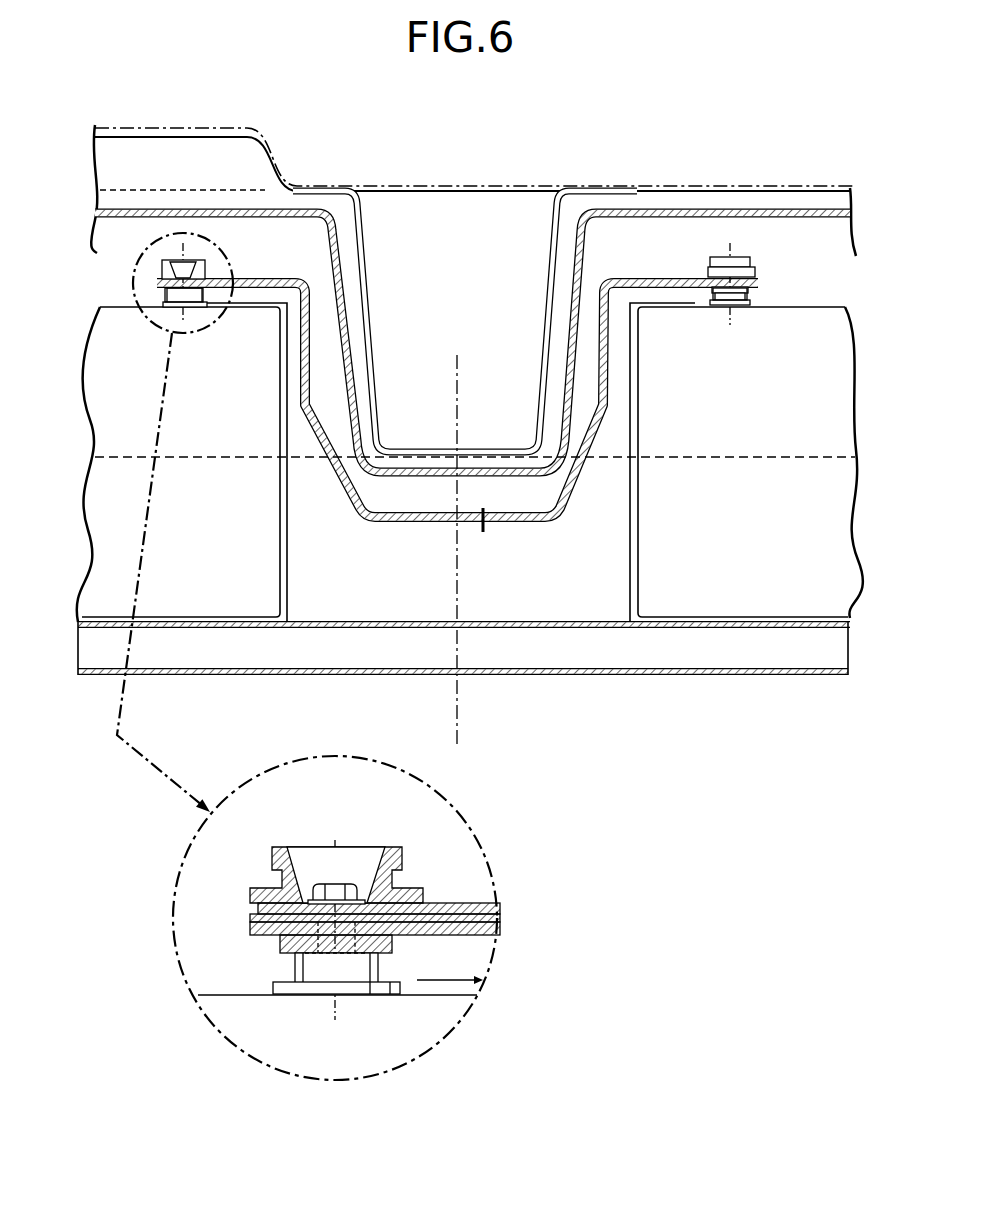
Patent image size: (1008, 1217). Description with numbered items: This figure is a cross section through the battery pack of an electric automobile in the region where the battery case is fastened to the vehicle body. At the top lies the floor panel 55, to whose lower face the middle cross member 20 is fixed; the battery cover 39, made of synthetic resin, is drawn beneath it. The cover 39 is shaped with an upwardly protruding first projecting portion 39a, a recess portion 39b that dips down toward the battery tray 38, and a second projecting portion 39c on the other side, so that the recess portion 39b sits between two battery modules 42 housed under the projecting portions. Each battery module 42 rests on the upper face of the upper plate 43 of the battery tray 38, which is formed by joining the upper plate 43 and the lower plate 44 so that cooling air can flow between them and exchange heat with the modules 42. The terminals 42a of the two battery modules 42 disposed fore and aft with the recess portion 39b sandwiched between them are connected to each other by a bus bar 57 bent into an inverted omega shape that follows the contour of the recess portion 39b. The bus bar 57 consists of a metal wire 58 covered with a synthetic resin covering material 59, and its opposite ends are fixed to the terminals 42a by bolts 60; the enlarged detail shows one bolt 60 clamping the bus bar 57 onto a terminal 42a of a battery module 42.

The middle cross member 20 is at (369, 316).
The battery tray 38 is at (608, 686).
The battery cover 39 is at (695, 200).
The first projecting portion 39a is at (190, 216).
The recess portion 39b is at (349, 370).
The second projecting portion 39c is at (762, 208).
The battery module 42 is at (189, 449).
The terminal 42a is at (172, 297).
The upper plate 43 is at (402, 620).
The lower plate 44 is at (418, 678).
The floor panel 55 is at (418, 186).
The bus bar 57 is at (527, 531).
The metal wire 58 is at (492, 917).
The synthetic resin covering material 59 is at (463, 931).
The bolt 60 is at (190, 268).